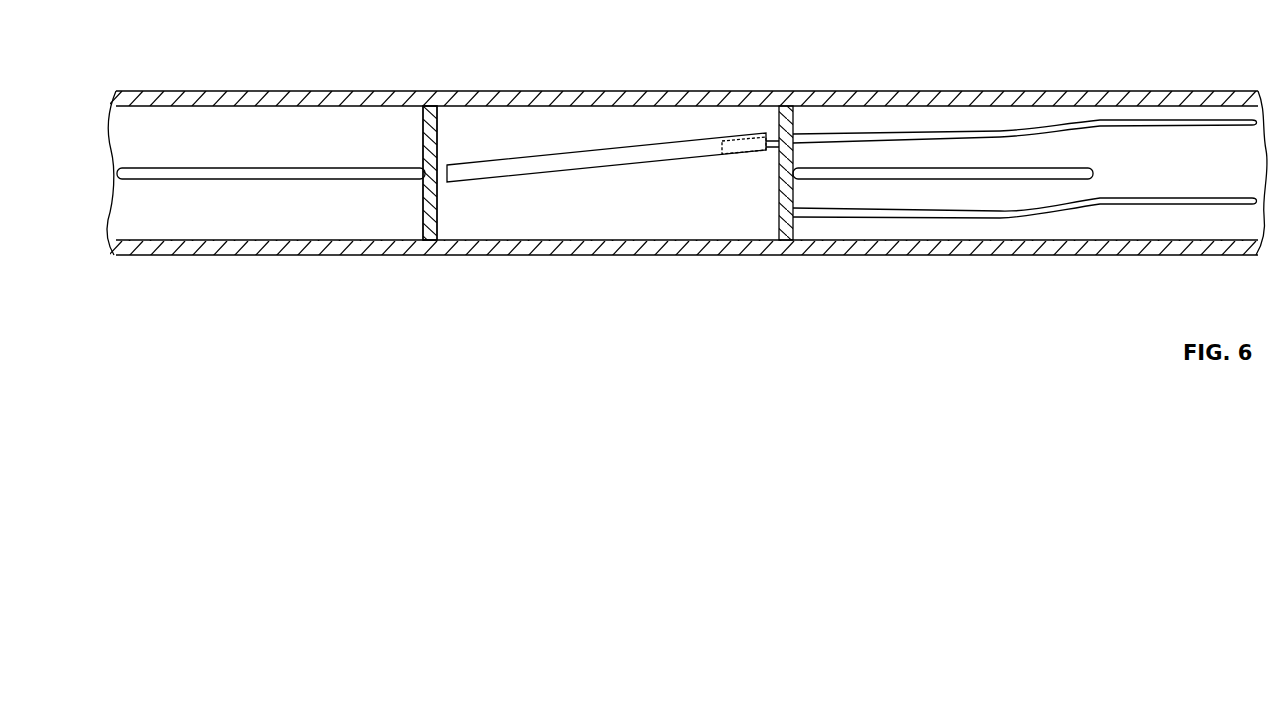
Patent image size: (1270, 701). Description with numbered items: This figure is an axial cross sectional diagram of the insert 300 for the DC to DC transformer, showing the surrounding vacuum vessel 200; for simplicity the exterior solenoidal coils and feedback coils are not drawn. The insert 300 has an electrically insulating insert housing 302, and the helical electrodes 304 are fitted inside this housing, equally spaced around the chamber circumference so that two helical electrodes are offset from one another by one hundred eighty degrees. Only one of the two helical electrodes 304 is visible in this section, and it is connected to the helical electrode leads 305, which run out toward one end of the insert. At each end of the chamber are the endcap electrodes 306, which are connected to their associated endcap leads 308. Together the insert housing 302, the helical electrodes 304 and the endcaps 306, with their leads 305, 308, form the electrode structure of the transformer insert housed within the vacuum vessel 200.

The vacuum vessel 200 is at (427, 91).
The insert 300 is at (767, 64).
The insert housing 302 is at (548, 242).
The helical electrodes 304 is at (560, 172).
The helical electrode leads 305 is at (1000, 130).
The endcaps 306 is at (424, 190).
The endcap leads 308 is at (183, 180).